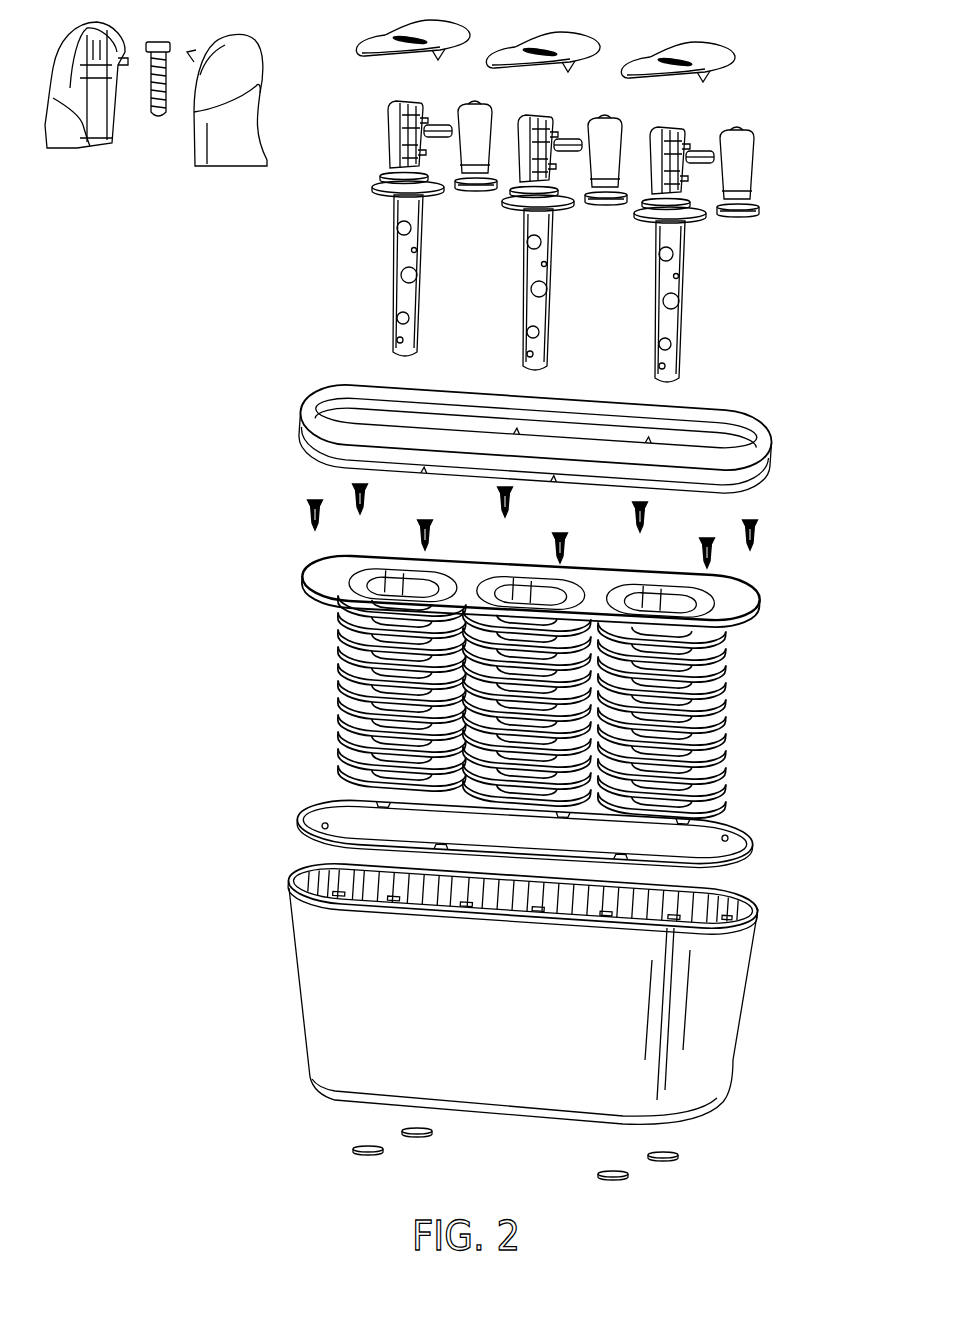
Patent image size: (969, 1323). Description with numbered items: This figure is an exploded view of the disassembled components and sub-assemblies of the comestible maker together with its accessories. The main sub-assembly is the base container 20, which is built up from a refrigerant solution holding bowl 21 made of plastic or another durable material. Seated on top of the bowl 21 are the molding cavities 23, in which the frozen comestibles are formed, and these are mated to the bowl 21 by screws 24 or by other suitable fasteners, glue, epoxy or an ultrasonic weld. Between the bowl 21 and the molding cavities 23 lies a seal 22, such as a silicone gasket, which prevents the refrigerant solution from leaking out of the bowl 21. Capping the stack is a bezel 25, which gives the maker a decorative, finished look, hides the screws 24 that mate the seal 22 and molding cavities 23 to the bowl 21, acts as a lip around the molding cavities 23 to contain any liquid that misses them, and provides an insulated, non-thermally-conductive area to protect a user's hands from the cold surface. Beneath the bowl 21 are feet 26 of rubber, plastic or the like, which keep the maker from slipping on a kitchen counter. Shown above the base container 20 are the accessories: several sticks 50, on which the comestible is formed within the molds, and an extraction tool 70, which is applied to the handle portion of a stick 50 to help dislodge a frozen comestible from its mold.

The base container 20 is at (272, 368).
The refrigerant solution holding bowl 21 is at (730, 1005).
The seal 22 is at (718, 820).
The molding cavities 23 is at (800, 642).
The screws 24 is at (760, 525).
The bezel 25 is at (775, 432).
The feet 26 is at (632, 1152).
The sticks 50 is at (800, 388).
The extraction tool 70 is at (267, 175).